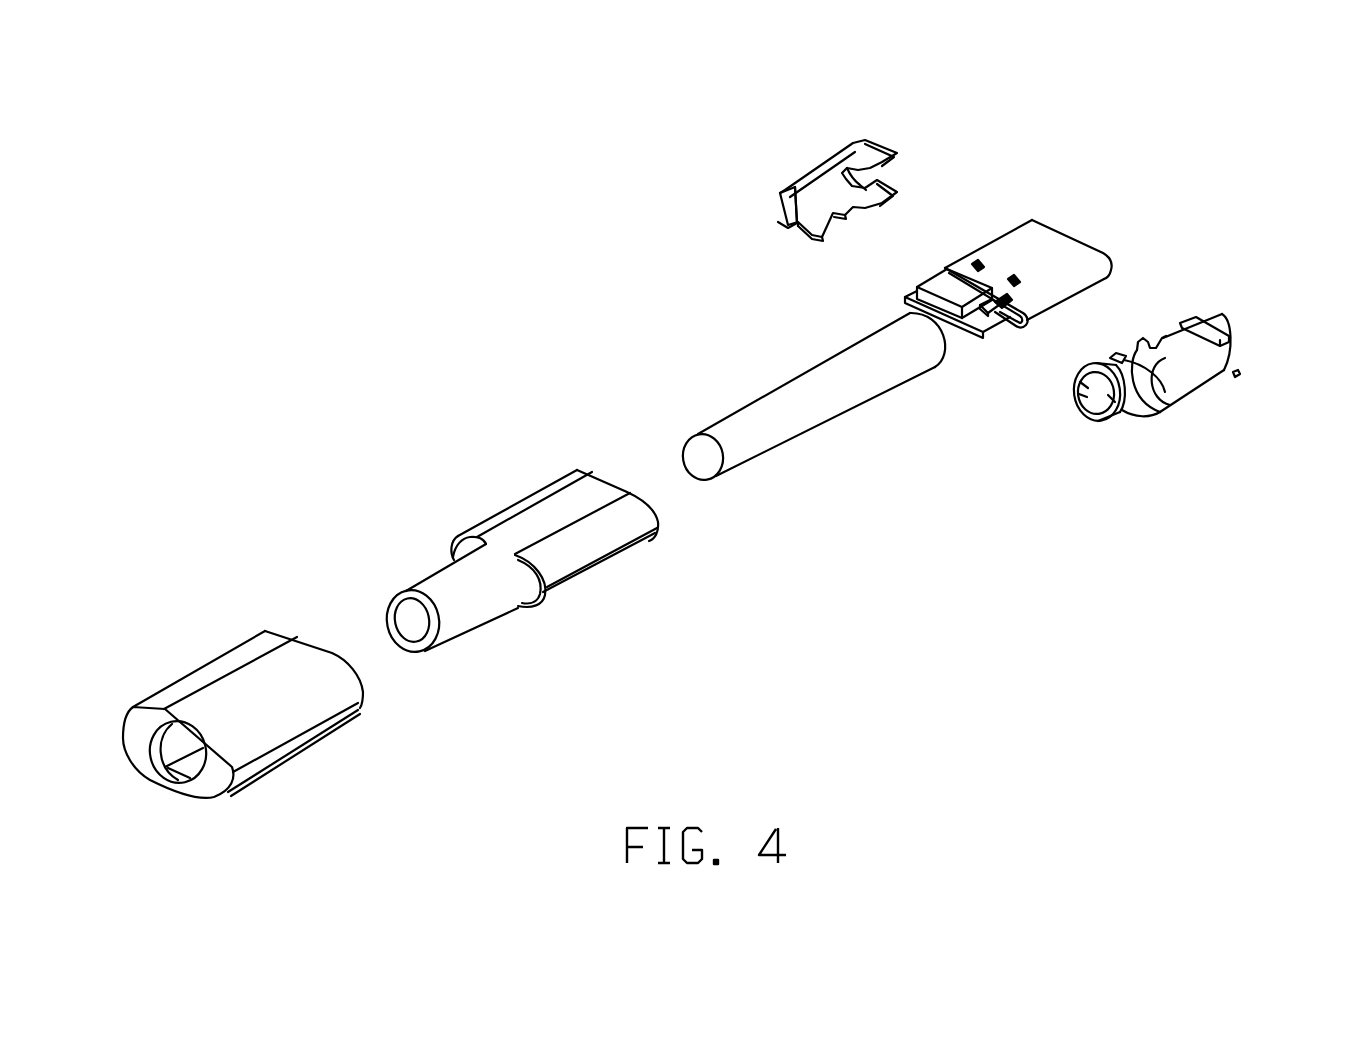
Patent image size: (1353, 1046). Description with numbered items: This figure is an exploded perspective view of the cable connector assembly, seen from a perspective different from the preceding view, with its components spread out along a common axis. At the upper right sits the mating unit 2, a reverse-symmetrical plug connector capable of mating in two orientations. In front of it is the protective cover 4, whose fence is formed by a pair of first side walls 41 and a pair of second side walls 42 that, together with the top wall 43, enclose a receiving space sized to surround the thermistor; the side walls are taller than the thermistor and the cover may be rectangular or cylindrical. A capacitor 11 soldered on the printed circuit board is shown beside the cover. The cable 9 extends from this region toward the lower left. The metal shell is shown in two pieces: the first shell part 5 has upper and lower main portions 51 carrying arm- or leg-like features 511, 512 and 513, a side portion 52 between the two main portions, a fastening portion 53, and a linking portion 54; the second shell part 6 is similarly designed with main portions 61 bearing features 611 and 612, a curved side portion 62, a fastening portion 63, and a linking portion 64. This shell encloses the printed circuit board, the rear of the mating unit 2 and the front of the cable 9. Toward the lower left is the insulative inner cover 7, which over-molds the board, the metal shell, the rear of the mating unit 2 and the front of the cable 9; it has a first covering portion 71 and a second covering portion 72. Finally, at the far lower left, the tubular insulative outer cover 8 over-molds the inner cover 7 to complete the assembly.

The mating unit 2 is at (1028, 241).
The protective cover 4 is at (905, 313).
The first shell part 5 is at (1192, 368).
The second shell part 6 is at (802, 189).
The insulative inner cover 7 is at (527, 572).
The insulative outer cover 8 is at (201, 647).
The cable 9 is at (807, 397).
The capacitor 11 is at (993, 312).
The first side walls 41 is at (905, 297).
The second side walls 42 is at (975, 318).
The top wall 43 is at (984, 287).
The main portions 51 is at (1181, 328).
The side portion 52 is at (1192, 328).
The fastening portion 53 is at (1122, 413).
The linking portion 54 is at (1157, 415).
The main portions 61 is at (830, 176).
The curved side portion 62 is at (803, 226).
The fastening portion 63 is at (805, 210).
The linking portion 64 is at (781, 204).
The first covering portion 71 is at (594, 530).
The second covering portion 72 is at (470, 594).
The arm or leg feature 511 is at (1150, 344).
The arm or leg feature 512 is at (1113, 358).
The arm or leg feature 513 is at (1200, 330).
The feature of main portion 611 is at (865, 210).
The feature of main portion 612 is at (898, 192).